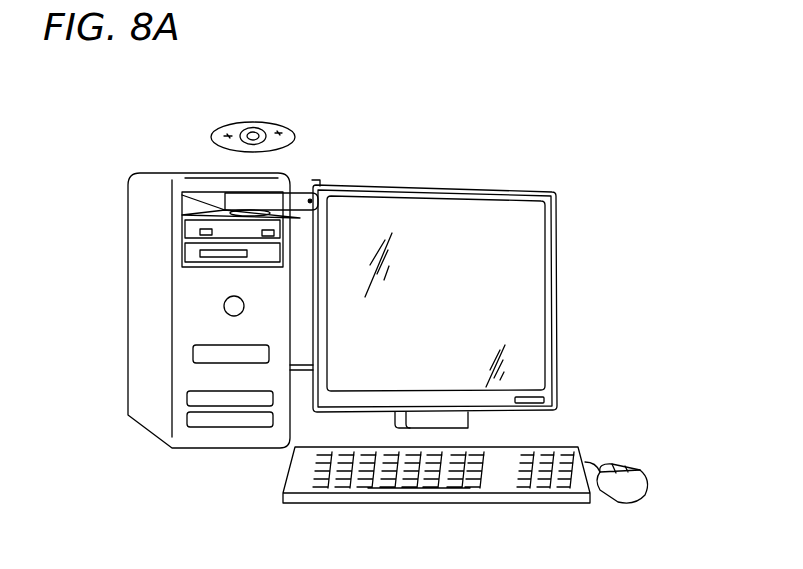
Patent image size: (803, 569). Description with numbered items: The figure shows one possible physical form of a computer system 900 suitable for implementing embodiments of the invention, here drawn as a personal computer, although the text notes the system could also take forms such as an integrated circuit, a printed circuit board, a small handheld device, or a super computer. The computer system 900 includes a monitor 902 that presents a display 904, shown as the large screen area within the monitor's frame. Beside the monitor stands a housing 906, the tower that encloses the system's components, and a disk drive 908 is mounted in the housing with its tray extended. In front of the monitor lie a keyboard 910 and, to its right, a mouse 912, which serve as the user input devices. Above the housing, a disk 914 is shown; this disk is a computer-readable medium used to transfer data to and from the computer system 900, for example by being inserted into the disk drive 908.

The computer system 900 is at (596, 156).
The monitor 902 is at (557, 275).
The display 904 is at (461, 215).
The housing 906 is at (142, 259).
The disk drive 908 is at (265, 200).
The keyboard 910 is at (445, 492).
The mouse 912 is at (640, 470).
The disk 914 is at (253, 120).